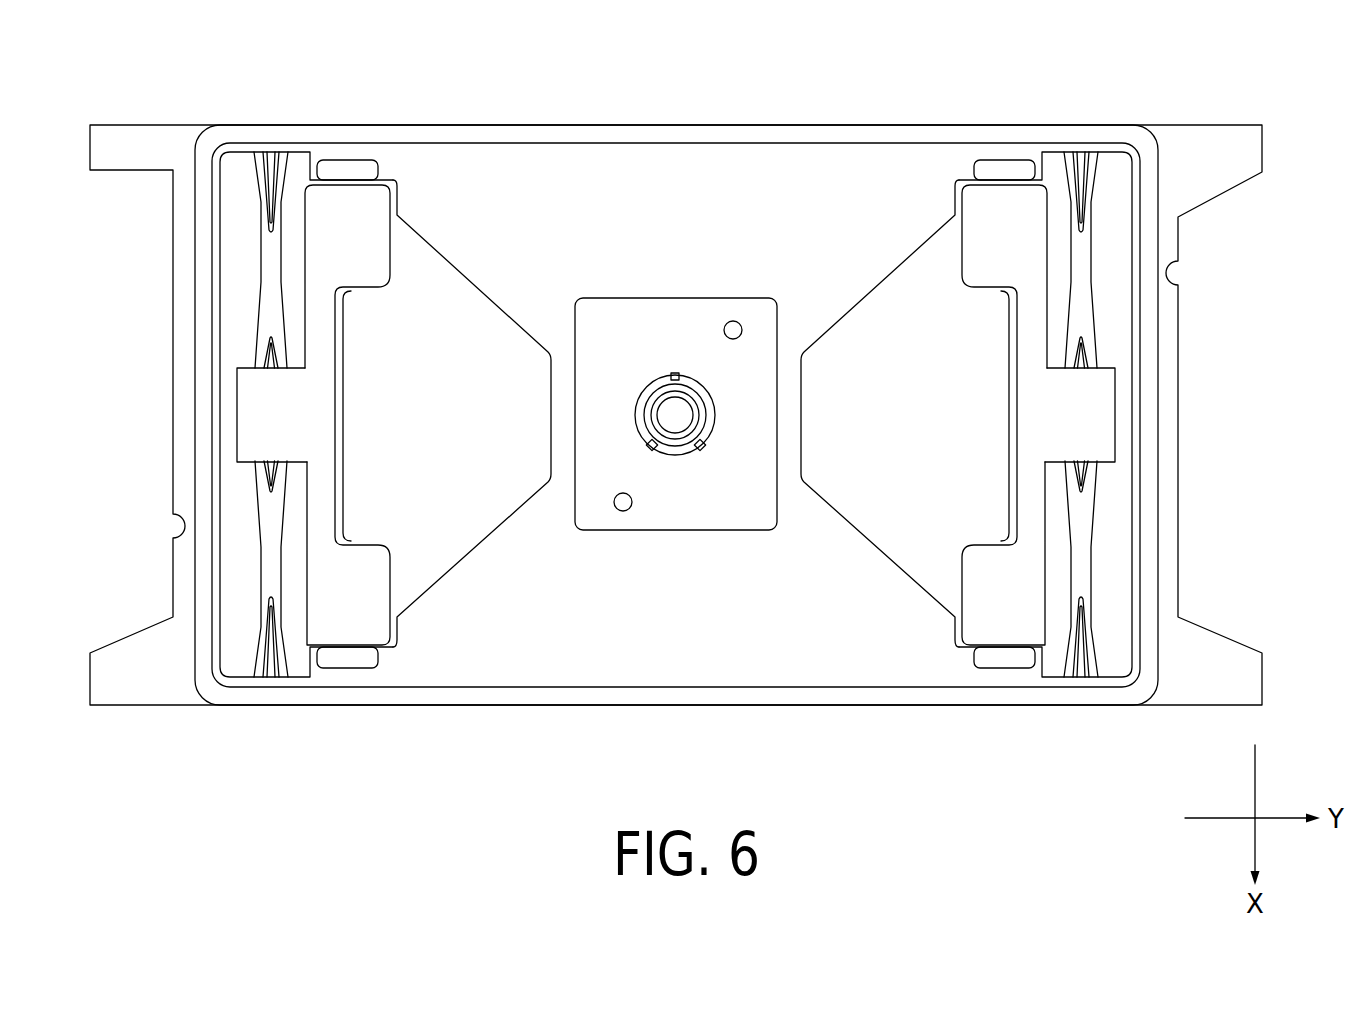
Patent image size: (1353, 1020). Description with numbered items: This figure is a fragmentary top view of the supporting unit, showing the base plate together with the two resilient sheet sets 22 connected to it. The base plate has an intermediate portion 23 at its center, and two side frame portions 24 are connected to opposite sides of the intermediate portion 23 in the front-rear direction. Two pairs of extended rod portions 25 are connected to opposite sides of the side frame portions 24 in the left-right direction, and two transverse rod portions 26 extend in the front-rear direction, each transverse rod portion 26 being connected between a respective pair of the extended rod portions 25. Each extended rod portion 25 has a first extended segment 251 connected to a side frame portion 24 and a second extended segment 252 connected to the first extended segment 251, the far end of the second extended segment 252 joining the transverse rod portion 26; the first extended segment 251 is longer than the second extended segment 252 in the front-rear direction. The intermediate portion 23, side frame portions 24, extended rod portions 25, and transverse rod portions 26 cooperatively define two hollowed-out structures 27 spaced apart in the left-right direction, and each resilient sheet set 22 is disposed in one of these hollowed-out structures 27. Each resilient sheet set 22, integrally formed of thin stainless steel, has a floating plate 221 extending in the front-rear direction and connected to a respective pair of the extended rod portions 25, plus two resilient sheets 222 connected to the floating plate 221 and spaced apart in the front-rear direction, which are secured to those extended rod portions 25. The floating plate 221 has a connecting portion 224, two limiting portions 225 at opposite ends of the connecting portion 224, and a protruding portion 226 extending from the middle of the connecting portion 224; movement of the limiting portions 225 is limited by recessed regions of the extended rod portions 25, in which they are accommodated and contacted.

The resilient sheet set 22 is at (683, 427).
The floating plate 221 is at (390, 625).
The resilient sheet 222 is at (268, 290).
The connecting portion 224 is at (1020, 422).
The limiting portion 225 is at (333, 160).
The protruding portion 226 is at (1097, 427).
The intermediate portion 23 is at (788, 402).
The side frame portion 24 is at (647, 227).
The extended rod portion 25 is at (992, 113).
The first extended segment 251 is at (1007, 153).
The second extended segment 252 is at (1058, 147).
The transverse rod portion 26 is at (1170, 343).
The hollowed-out structure 27 is at (466, 474).